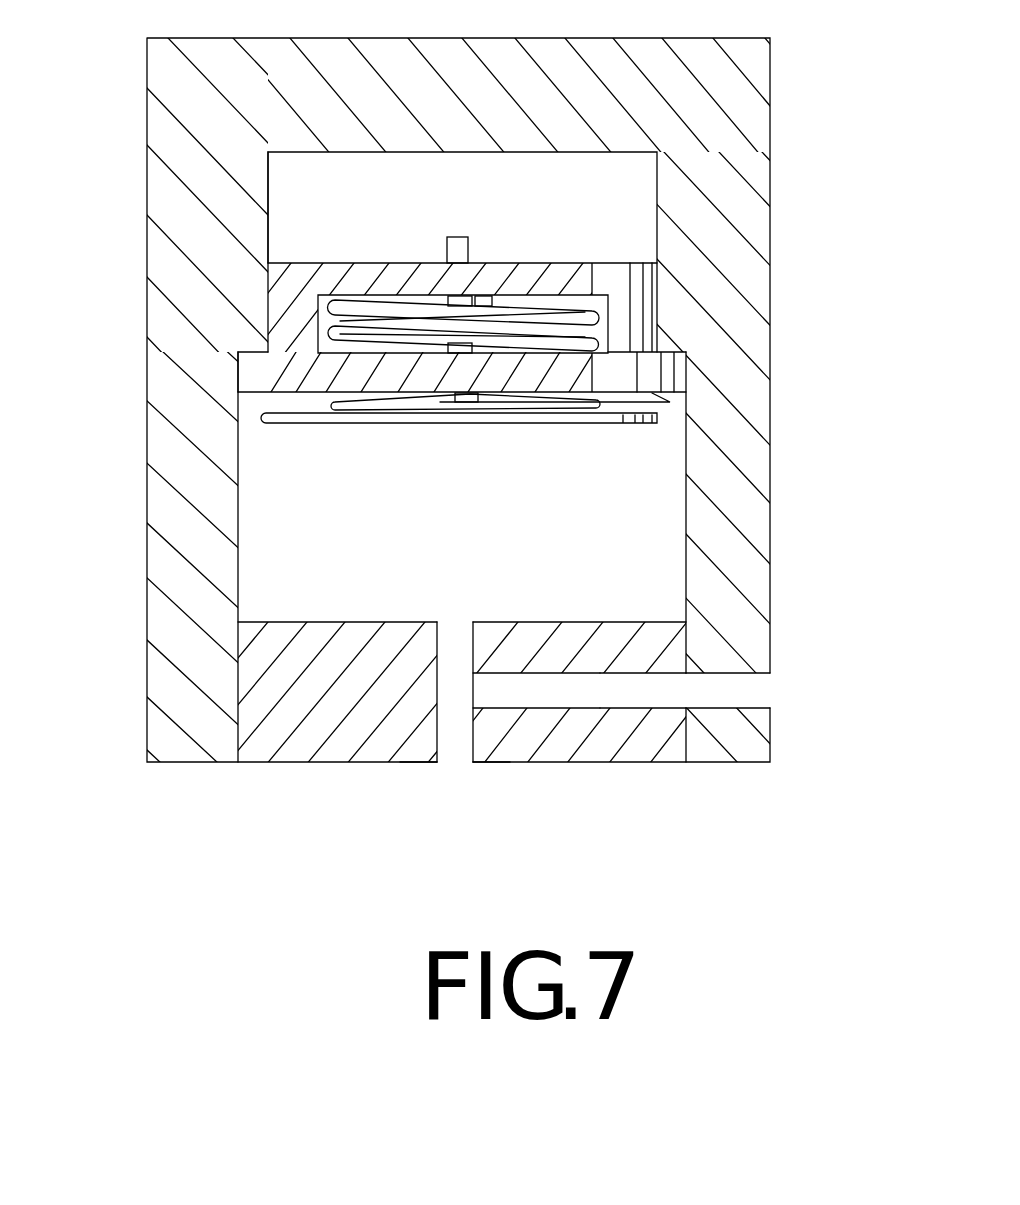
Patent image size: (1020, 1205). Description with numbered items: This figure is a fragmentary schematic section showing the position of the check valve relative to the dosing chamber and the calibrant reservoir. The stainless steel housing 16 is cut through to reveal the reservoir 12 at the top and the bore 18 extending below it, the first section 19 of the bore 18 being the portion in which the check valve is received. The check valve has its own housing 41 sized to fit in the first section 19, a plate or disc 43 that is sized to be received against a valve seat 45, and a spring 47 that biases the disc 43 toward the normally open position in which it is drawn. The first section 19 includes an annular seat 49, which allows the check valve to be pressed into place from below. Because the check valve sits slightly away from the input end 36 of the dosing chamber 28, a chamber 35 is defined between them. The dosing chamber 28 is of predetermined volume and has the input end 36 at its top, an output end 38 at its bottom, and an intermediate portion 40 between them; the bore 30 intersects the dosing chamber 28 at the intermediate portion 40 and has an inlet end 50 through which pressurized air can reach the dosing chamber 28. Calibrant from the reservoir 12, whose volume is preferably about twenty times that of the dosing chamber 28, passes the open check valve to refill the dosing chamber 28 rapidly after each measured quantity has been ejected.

The housing 16 is at (510, 390).
The reservoir 12 is at (302, 188).
The bore 18 is at (267, 235).
The first section of the bore 19 is at (267, 257).
The annular seat 49 is at (253, 350).
The spring 47 is at (610, 310).
The housing 41 is at (662, 368).
The valve seat 45 is at (645, 396).
The disc 43 is at (627, 422).
The chamber 35 is at (297, 503).
The input end 36 is at (452, 620).
The intermediate portion 40 is at (452, 687).
The output end 38 is at (452, 763).
The dosing chamber 28 is at (457, 707).
The bore 30 is at (590, 688).
The inlet end 50 is at (735, 693).